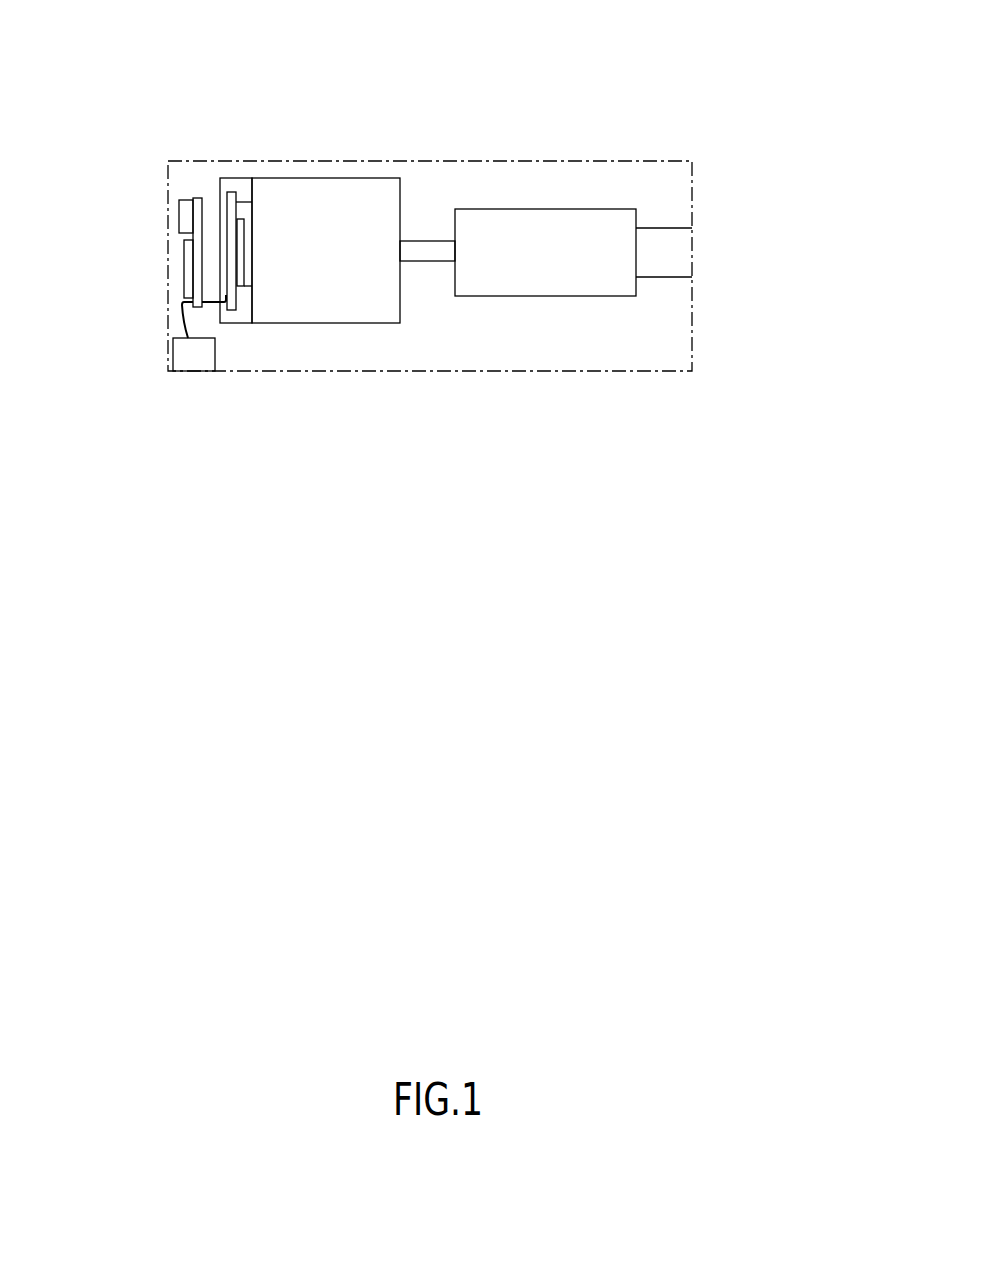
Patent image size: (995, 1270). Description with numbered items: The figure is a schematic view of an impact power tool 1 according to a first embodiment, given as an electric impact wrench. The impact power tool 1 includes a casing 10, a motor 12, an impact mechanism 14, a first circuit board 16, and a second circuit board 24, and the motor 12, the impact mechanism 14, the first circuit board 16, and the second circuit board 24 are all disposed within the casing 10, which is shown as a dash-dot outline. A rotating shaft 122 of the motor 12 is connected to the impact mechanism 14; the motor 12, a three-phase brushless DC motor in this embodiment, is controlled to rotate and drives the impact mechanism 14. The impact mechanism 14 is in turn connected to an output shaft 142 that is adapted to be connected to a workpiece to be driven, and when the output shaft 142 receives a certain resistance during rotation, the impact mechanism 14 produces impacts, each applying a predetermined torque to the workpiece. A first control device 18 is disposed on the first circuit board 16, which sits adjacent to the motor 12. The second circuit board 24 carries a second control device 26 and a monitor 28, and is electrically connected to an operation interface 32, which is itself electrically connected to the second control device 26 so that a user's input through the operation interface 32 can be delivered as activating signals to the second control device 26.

The impact power tool 1 is at (738, 92).
The casing 10 is at (535, 161).
The motor 12 is at (313, 205).
The rotating shaft 122 is at (416, 255).
The impact mechanism 14 is at (603, 262).
The output shaft 142 is at (672, 258).
The first circuit board 16 is at (231, 311).
The first control device 18 is at (242, 288).
The second circuit board 24 is at (197, 198).
The second control device 26 is at (183, 269).
The monitor 28 is at (178, 220).
The operation interface 32 is at (184, 360).